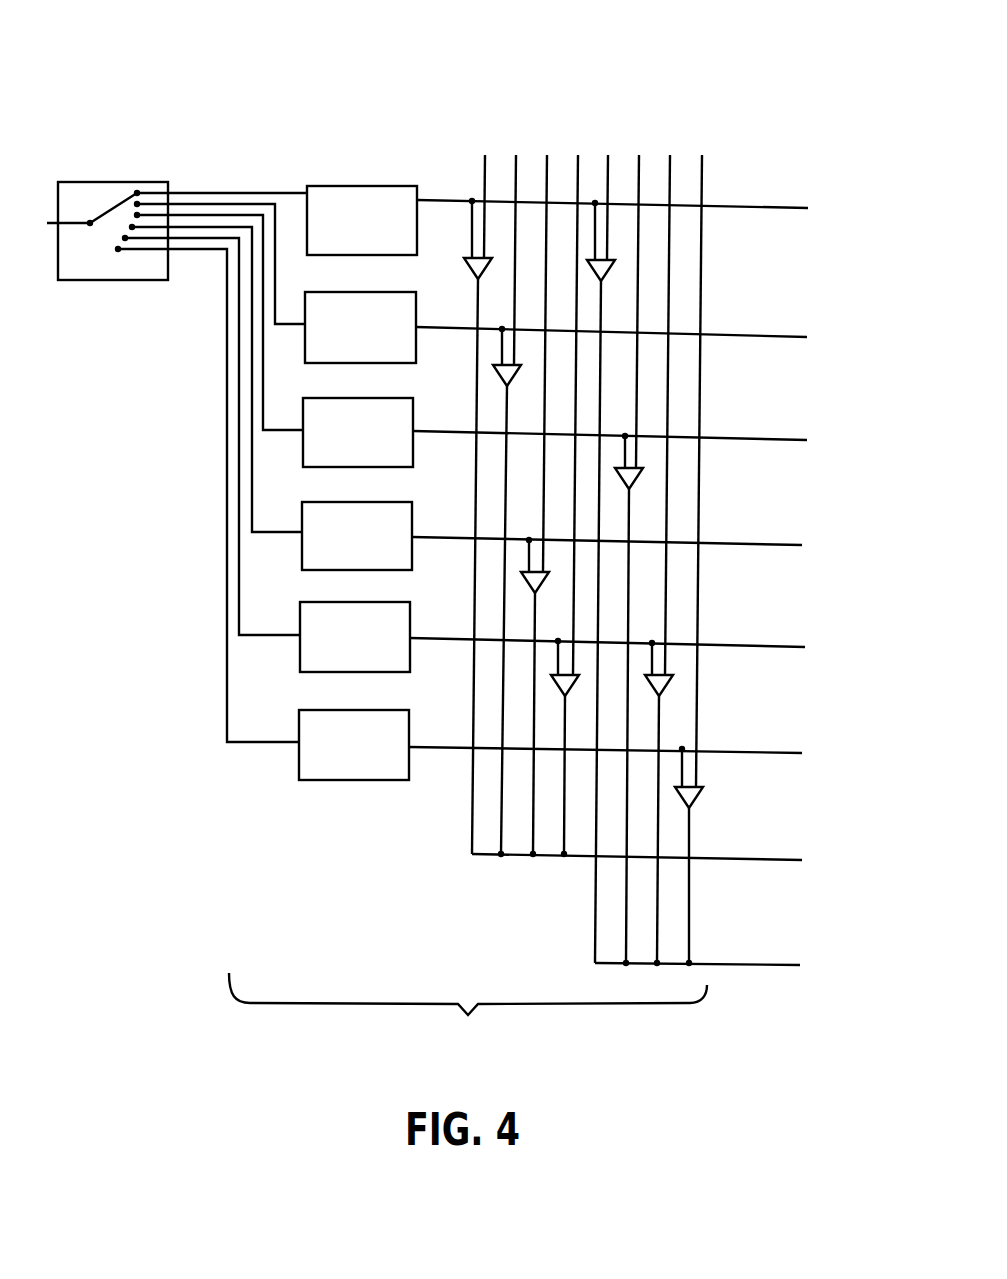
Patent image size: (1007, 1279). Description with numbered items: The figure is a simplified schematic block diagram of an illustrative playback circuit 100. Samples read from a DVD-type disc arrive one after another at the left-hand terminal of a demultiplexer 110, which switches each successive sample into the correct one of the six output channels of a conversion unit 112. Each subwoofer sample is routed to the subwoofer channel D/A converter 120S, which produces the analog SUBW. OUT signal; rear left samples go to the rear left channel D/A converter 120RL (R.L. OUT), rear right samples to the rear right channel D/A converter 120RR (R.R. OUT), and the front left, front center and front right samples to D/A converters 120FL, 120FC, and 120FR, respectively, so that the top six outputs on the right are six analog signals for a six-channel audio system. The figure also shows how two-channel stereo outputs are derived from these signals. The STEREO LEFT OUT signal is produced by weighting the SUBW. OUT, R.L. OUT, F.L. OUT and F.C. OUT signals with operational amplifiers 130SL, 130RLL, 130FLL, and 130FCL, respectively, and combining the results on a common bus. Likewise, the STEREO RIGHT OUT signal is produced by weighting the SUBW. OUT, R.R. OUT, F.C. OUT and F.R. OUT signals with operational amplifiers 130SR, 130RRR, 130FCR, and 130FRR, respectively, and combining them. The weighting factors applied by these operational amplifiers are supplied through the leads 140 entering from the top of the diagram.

The playback circuit 100 is at (227, 97).
The demultiplexer 110 is at (93, 182).
The conversion unit 112 is at (468, 1011).
The subwoofer channel D/A converter 120S is at (307, 226).
The rear left channel D/A converter 120RL is at (305, 305).
The rear right channel D/A converter 120RR is at (303, 418).
The front left channel D/A converter 120FL is at (302, 525).
The front center channel D/A converter 120FC is at (300, 630).
The front right channel D/A converter 120FR is at (299, 730).
The operational amplifier 130SL is at (464, 266).
The operational amplifier 130SR is at (614, 272).
The operational amplifier 130RLL is at (521, 378).
The operational amplifier 130RRR is at (643, 483).
The operational amplifier 130FLL is at (549, 585).
The operational amplifier 130FCL is at (553, 684).
The operational amplifier 130FCR is at (673, 690).
The operational amplifier 130FRR is at (703, 796).
The leads 140 is at (715, 160).